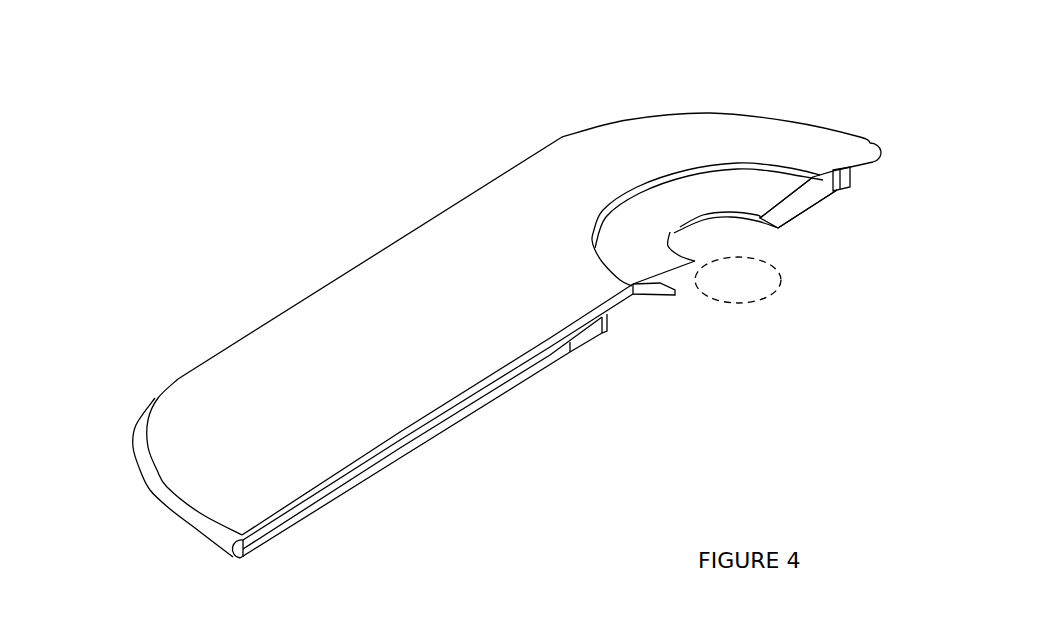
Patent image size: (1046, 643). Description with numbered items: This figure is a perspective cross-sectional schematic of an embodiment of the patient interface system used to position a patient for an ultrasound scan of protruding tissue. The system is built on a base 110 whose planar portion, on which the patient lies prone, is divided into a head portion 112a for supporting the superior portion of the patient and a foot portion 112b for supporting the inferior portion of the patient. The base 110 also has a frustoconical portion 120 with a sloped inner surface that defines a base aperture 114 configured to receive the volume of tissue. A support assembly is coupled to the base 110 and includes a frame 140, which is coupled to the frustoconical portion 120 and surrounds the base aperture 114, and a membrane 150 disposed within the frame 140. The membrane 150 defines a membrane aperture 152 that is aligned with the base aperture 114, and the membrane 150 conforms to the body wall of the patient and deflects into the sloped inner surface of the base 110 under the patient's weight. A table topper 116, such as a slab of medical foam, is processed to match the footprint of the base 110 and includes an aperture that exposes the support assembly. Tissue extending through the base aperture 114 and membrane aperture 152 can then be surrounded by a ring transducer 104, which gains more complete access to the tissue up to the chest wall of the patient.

The ring transducer 104 is at (738, 280).
The base 110 is at (145, 476).
The head portion 112a is at (417, 437).
The foot portion 112b is at (587, 330).
The base aperture 114 is at (693, 250).
The table topper 116 is at (258, 370).
The frustoconical portion 120 is at (780, 215).
The frame 140 is at (840, 183).
The membrane 150 is at (727, 180).
The membrane aperture 152 is at (707, 233).